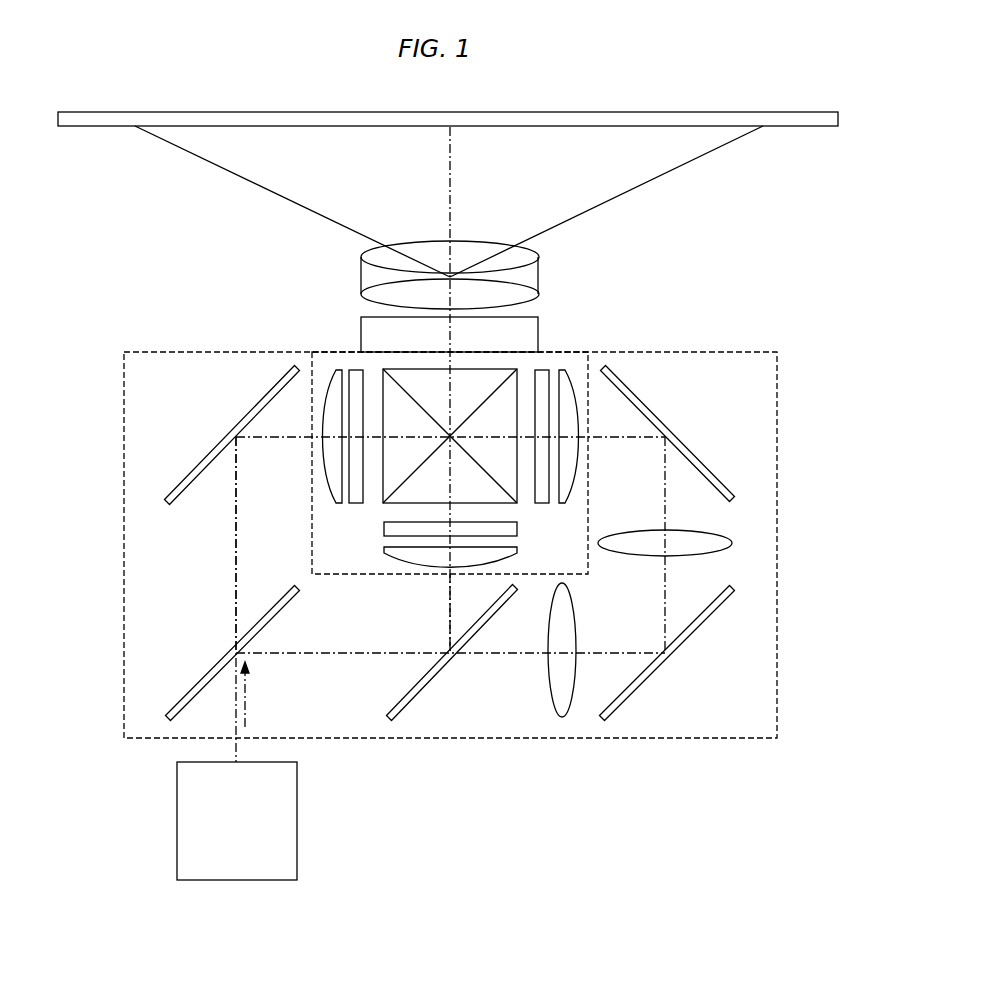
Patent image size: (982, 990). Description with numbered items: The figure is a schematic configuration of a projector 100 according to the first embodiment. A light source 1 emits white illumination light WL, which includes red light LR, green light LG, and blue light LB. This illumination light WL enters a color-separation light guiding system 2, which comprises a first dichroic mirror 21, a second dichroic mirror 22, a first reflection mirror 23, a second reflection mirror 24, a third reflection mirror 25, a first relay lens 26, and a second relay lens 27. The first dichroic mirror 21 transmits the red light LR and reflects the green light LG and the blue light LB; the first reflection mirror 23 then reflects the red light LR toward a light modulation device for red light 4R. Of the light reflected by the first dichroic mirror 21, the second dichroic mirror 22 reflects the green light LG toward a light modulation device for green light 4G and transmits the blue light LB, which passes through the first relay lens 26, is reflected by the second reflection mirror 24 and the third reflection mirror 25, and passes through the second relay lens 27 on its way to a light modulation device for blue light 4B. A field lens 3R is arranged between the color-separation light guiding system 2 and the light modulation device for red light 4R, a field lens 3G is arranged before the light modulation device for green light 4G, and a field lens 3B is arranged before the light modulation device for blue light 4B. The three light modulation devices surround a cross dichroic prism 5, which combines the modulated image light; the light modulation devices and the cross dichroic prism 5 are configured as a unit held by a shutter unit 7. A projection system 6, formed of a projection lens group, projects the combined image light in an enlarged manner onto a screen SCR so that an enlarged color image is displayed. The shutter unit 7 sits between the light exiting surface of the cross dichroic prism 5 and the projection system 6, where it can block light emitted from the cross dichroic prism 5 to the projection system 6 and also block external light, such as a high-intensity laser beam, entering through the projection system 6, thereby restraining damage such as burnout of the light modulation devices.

The light source 1 is at (297, 817).
The color-separation light guiding system 2 is at (124, 497).
The field lens 3R is at (327, 368).
The light modulation device for red light 4R is at (357, 368).
The field lens 3G is at (388, 553).
The light modulation device for green light 4G is at (384, 531).
The field lens 3B is at (572, 368).
The light modulation device for blue light 4B is at (545, 368).
The cross dichroic prism 5 is at (510, 483).
The projection system 6 is at (430, 253).
The shutter unit 7 is at (525, 330).
The first dichroic mirror 21 is at (198, 683).
The second dichroic mirror 22 is at (432, 686).
The first reflection mirror 23 is at (210, 450).
The second reflection mirror 24 is at (692, 635).
The third reflection mirror 25 is at (692, 450).
The first relay lens 26 is at (548, 680).
The second relay lens 27 is at (722, 532).
The projector 100 is at (796, 314).
The screen SCR is at (803, 127).
The illumination light WL is at (247, 702).
The red light LR is at (236, 567).
The green light LG is at (450, 613).
The blue light LB is at (665, 600).